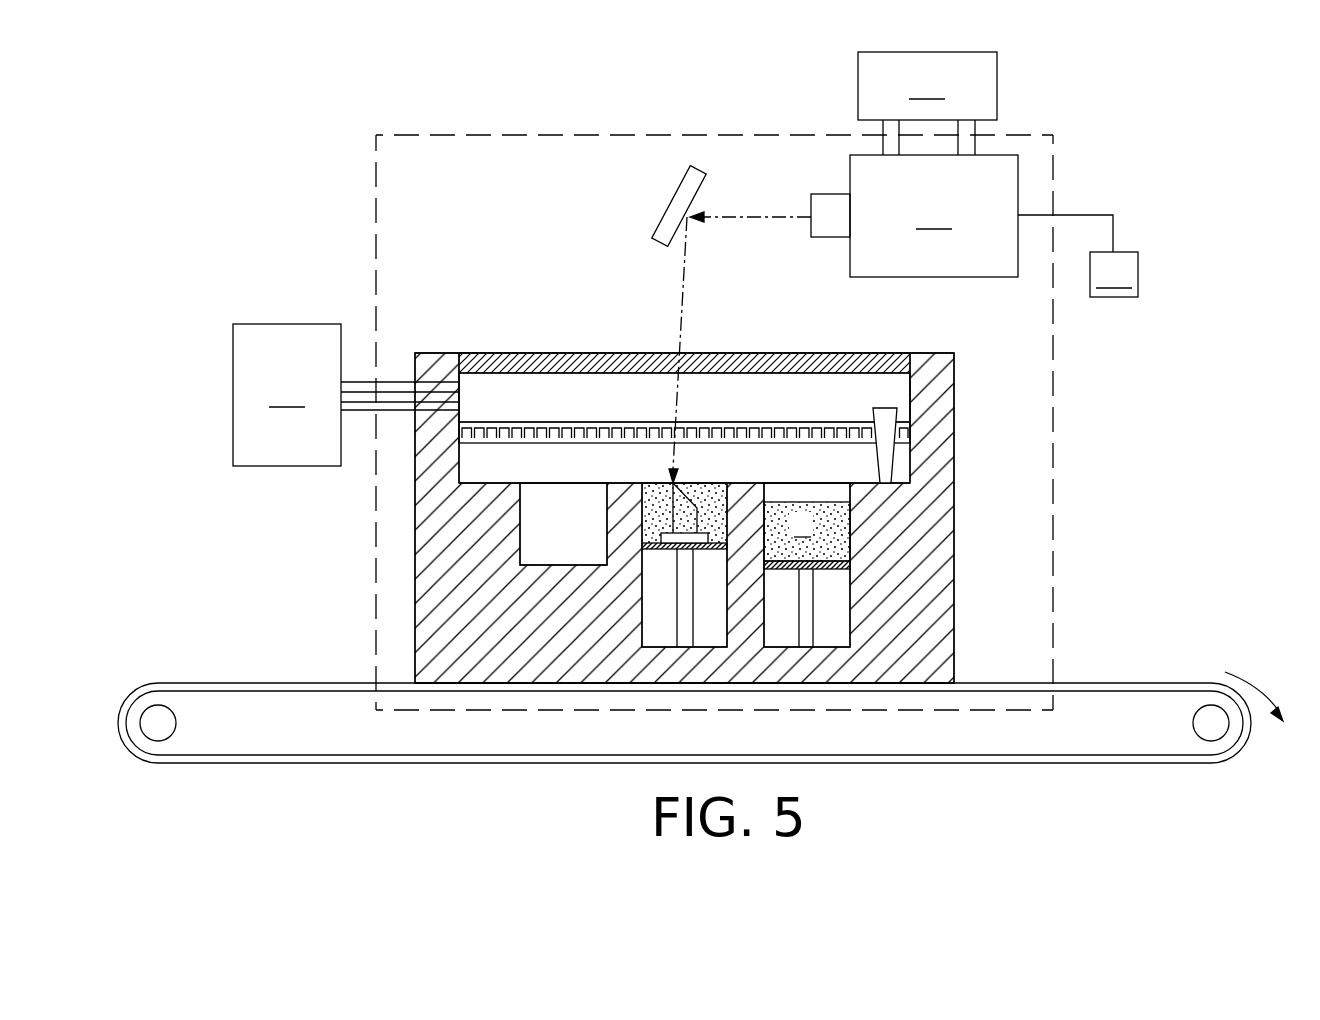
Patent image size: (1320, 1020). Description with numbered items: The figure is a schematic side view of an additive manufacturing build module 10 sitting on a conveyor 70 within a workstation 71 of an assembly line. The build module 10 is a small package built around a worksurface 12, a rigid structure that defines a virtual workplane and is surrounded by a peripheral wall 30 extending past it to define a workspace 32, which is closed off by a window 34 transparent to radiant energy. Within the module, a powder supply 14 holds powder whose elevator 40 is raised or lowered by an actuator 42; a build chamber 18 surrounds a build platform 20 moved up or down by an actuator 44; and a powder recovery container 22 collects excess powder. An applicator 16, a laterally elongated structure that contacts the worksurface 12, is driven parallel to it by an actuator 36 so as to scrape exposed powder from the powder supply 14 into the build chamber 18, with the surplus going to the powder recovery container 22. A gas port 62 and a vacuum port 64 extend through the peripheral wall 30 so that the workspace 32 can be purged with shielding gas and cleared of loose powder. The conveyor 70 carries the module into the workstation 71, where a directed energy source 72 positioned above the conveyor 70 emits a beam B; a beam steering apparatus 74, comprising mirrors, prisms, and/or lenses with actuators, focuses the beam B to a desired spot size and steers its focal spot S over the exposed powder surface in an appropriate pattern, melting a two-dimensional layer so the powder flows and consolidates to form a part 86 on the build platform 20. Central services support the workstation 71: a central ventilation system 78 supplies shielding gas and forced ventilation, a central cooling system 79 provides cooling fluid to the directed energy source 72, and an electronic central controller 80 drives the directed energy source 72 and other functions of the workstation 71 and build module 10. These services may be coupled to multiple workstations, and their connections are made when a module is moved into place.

The additive manufacturing build module 10 is at (882, 345).
The worksurface 12 is at (904, 483).
The powder supply 14 is at (801, 485).
The applicator 16 is at (884, 408).
The build chamber 18 is at (653, 488).
The build platform 20 is at (669, 550).
The powder recovery container 22 is at (568, 488).
The peripheral wall 30 is at (433, 352).
The workspace 32 is at (740, 372).
The window 34 is at (567, 353).
The actuator 36 is at (548, 427).
The elevator 40 is at (830, 568).
The actuator 42 is at (804, 635).
The actuator 44 is at (684, 633).
The gas port 62 is at (459, 383).
The vacuum port 64 is at (459, 405).
The conveyor 70 is at (1108, 683).
The workstation 71 is at (1056, 185).
The directed energy source 72 is at (914, 216).
The beam steering apparatus 74 is at (676, 193).
The central ventilation system 78 is at (346, 395).
The central cooling system 79 is at (927, 103).
The electronic central controller 80 is at (1078, 256).
The part 86 is at (680, 512).
The focal spot S is at (678, 483).
The beam B is at (684, 284).